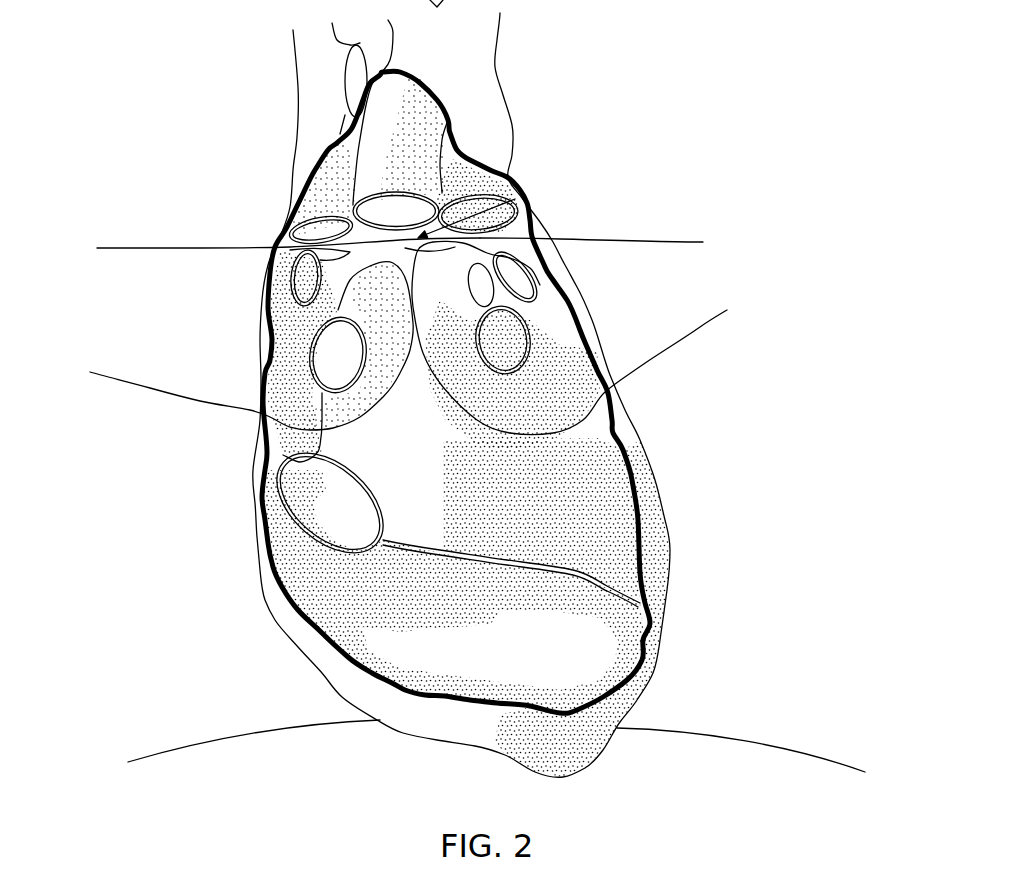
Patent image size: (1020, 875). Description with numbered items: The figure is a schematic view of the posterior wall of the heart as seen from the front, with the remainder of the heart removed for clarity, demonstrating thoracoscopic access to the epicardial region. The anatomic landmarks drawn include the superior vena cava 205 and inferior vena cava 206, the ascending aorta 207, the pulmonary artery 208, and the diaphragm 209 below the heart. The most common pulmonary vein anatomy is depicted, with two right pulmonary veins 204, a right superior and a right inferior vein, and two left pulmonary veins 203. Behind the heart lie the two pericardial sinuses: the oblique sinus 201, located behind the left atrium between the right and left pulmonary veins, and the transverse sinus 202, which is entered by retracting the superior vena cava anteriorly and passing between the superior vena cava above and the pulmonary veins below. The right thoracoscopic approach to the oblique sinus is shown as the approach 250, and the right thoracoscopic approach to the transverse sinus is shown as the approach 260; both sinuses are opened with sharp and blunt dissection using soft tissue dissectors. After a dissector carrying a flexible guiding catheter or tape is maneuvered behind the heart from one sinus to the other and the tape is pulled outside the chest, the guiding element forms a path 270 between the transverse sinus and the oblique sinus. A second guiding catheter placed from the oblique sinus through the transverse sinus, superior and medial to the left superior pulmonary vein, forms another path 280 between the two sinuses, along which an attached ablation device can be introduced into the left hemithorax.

The oblique sinus 201 is at (425, 318).
The transverse sinus 202 is at (514, 193).
The left pulmonary veins 203 is at (500, 347).
The right pulmonary veins 204 is at (340, 368).
The superior vena cava 205 is at (298, 194).
The inferior vena cava 206 is at (328, 513).
The ascending aorta 207 is at (430, 138).
The pulmonary artery 208 is at (488, 187).
The diaphragm 209 is at (633, 760).
The right thoracoscopic approach to the oblique sinus 250 is at (214, 381).
The right thoracoscopic approach to the transverse sinus 260 is at (232, 220).
The path between the transverse sinus and the oblique sinus 270 is at (123, 248).
The path between the transverse sinus and the oblique sinus 280 is at (660, 241).